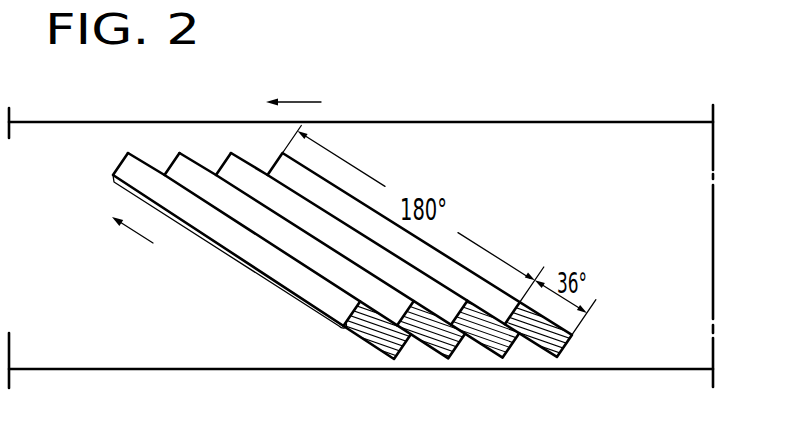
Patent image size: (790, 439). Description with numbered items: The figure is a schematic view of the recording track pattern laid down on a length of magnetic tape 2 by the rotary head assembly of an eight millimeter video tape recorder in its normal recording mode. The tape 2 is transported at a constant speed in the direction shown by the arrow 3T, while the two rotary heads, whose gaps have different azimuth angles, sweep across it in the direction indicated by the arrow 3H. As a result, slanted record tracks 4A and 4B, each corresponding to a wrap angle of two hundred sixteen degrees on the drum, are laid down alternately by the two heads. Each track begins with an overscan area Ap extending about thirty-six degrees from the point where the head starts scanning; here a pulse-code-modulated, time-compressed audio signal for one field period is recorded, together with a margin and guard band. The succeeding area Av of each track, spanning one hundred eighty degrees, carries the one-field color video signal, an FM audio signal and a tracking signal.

The magnetic tape 2 is at (643, 356).
The record track 4A is at (408, 344).
The record track 4B is at (462, 343).
The video signal recording area Av is at (241, 263).
The overscan area Ap is at (372, 352).
The tape transport direction 3T is at (304, 102).
The head rotation direction 3H is at (131, 229).